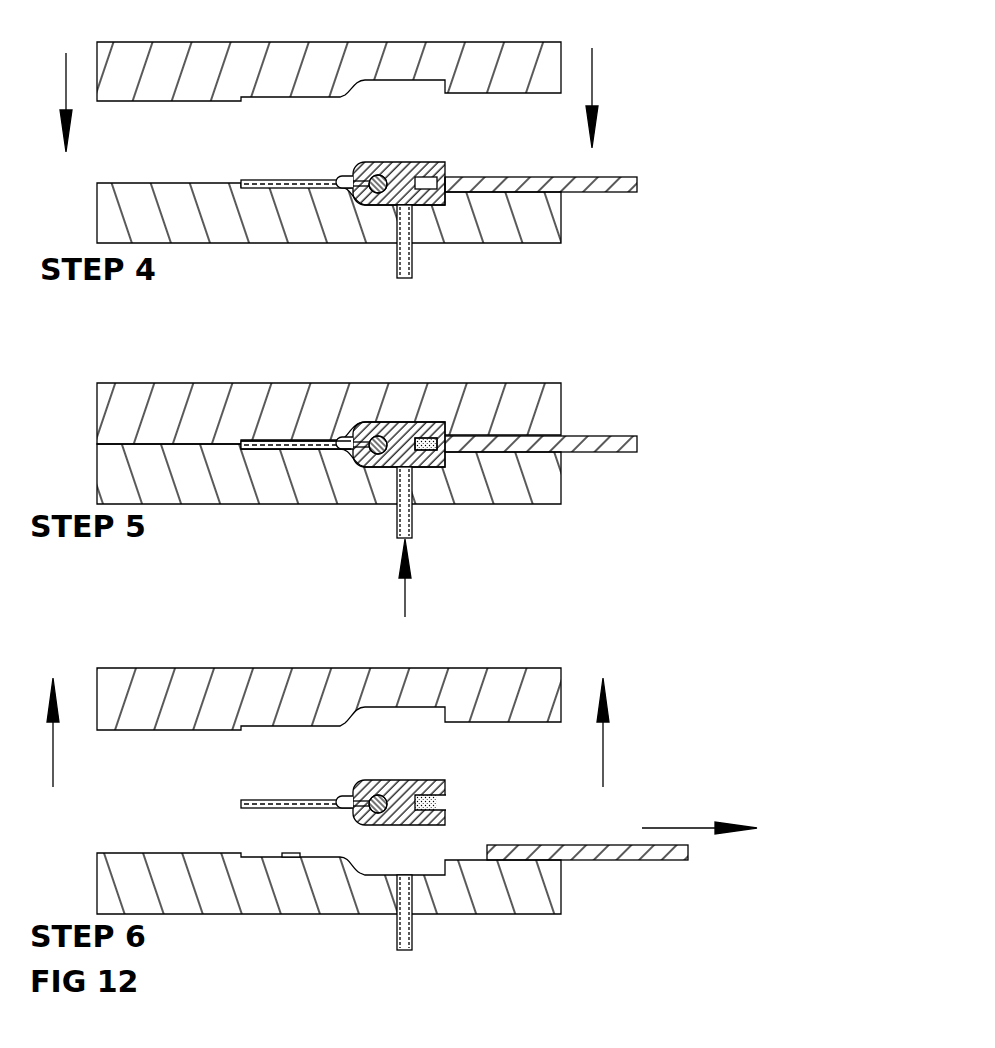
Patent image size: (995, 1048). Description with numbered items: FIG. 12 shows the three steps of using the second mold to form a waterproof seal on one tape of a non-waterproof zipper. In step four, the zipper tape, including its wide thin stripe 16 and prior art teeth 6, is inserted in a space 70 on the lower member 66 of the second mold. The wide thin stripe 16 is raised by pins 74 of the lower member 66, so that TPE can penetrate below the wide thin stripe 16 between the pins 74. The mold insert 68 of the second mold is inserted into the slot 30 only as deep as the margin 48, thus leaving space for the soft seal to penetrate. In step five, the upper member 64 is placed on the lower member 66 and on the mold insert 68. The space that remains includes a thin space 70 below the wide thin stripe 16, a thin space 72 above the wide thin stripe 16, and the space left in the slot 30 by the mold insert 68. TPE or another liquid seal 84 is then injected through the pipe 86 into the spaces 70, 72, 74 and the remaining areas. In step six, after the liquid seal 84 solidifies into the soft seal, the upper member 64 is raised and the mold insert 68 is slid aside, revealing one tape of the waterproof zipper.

The prior art teeth 6 is at (400, 162).
The wide thin stripe 16 is at (285, 181).
The slot 30 is at (425, 177).
The margin 48 is at (440, 186).
The upper member 64 is at (540, 42).
The lower member 66 is at (97, 192).
The mold insert 68 is at (637, 186).
The thin space 70 is at (272, 449).
The thin space 72 is at (277, 441).
The pins 74 is at (424, 437).
The liquid seal 84 is at (417, 578).
The pipe 86 is at (414, 521).